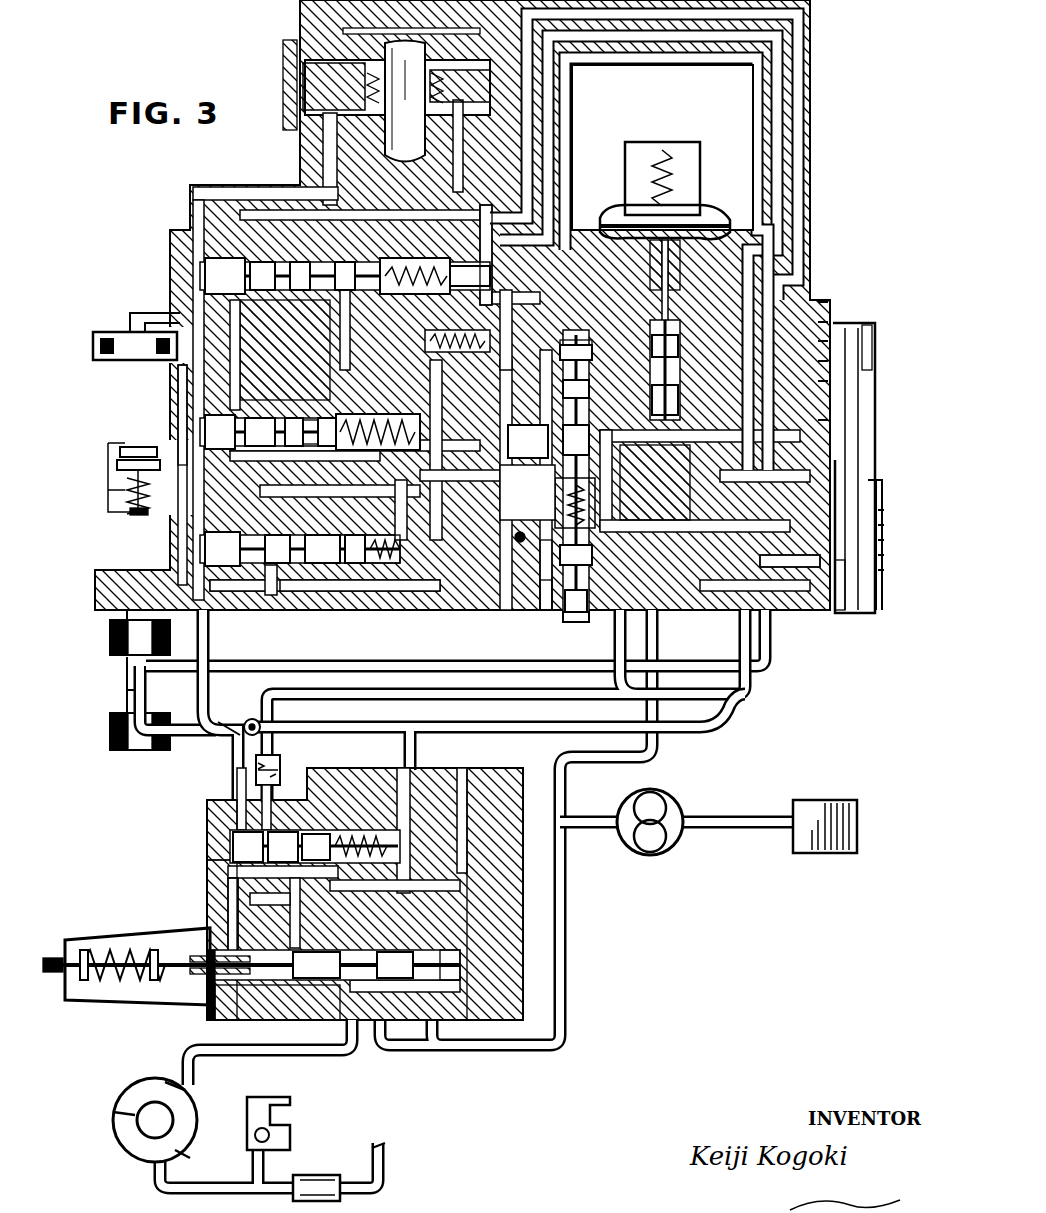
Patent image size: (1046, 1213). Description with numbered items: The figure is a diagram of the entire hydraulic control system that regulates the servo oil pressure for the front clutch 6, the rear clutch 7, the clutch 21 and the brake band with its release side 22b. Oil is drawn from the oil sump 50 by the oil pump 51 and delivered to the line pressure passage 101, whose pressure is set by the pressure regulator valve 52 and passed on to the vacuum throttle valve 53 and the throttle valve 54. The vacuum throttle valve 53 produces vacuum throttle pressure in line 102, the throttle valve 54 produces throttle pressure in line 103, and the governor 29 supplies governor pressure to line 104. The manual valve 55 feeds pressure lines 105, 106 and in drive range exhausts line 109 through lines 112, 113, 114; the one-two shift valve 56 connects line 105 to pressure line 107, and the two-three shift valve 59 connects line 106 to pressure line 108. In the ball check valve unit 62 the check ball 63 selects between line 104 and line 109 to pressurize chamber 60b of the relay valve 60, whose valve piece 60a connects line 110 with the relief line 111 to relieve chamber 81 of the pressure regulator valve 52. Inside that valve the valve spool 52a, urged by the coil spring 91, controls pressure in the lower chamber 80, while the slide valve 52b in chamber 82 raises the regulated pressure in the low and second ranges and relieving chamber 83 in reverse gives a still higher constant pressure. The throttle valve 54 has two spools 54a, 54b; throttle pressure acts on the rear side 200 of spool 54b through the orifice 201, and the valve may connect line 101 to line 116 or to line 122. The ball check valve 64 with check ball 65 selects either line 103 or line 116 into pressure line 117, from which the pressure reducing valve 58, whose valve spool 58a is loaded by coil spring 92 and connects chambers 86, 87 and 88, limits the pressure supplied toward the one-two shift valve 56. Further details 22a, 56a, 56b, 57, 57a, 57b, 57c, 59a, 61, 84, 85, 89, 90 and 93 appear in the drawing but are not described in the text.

The front clutch 6 is at (110, 738).
The rear clutch 7 is at (110, 635).
The clutch 21 is at (100, 332).
The band servo apply chamber 22a is at (120, 453).
The release side of band 22b is at (127, 494).
The governor 29 is at (396, 101).
The oil sump 50 is at (840, 845).
The oil pump 51 is at (675, 840).
The pressure regulator valve 52 is at (470, 985).
The valve spool 52a is at (322, 980).
The slide valve 52b is at (277, 1003).
The vacuum throttle valve 53 is at (668, 387).
The throttle valve 54 is at (581, 487).
The valve spool 54a is at (566, 610).
The valve spool 54b is at (560, 505).
The manual valve 55 is at (842, 610).
The one-two shift valve 56 is at (205, 276).
The shift valve plug 56a is at (220, 262).
The shift valve passage 56b is at (484, 262).
The 2-3 shift valve 57 is at (310, 415).
The shift valve land 57a is at (218, 415).
The shift valve passage 57b is at (185, 370).
The shift valve land 57c is at (310, 418).
The pressure reducing valve 58 is at (285, 350).
The valve spool 58a is at (305, 459).
The two-three shift valve 59 is at (292, 535).
The passage 59a is at (270, 595).
The relay valve 60 is at (215, 835).
The valve piece 60a is at (250, 890).
The chamber 60b is at (250, 862).
The orifice check valve 61 is at (280, 770).
The ball check valve unit 62 is at (225, 735).
The check ball 63 is at (250, 718).
The ball check valve 64 is at (548, 470).
The check ball 65 is at (548, 560).
The lower chamber 80 is at (380, 952).
The chamber 81 is at (292, 990).
The chamber 82 is at (208, 1015).
The chamber 83 is at (495, 894).
The valve body block 84 is at (595, 510).
The passage 85 is at (543, 605).
The chamber 86 is at (435, 352).
The chamber 87 is at (355, 490).
The chamber 88 is at (409, 510).
The shift valve spring 89 is at (412, 258).
The detent valve 90 is at (365, 830).
The coil spring 91 is at (115, 950).
The coil spring 92 is at (350, 414).
The valve land 93 is at (349, 257).
The line pressure passage 101 is at (567, 930).
The line 102 is at (625, 672).
The line 103 is at (545, 360).
The line 104 is at (205, 725).
The pressure line 105 is at (462, 800).
The pressure line 106 is at (320, 592).
The pressure line 107 is at (249, 355).
The pressure line 108 is at (235, 592).
The line 109 is at (405, 820).
The line 110 is at (290, 922).
The relief line 111 is at (320, 830).
The line 112 is at (880, 612).
The line 113 is at (810, 568).
The line 114 is at (870, 470).
The line 116 is at (540, 585).
The pressure line 117 is at (403, 549).
The line 122 is at (528, 441).
The rear side of valve spool 200 is at (655, 300).
The orifice 201 is at (590, 355).